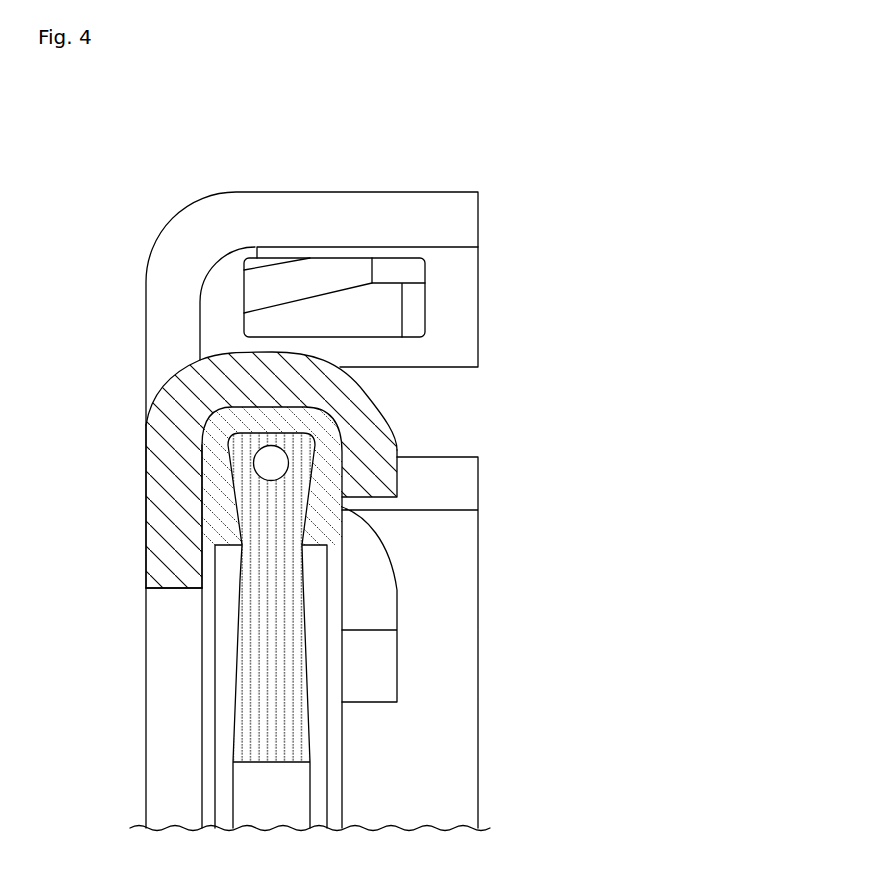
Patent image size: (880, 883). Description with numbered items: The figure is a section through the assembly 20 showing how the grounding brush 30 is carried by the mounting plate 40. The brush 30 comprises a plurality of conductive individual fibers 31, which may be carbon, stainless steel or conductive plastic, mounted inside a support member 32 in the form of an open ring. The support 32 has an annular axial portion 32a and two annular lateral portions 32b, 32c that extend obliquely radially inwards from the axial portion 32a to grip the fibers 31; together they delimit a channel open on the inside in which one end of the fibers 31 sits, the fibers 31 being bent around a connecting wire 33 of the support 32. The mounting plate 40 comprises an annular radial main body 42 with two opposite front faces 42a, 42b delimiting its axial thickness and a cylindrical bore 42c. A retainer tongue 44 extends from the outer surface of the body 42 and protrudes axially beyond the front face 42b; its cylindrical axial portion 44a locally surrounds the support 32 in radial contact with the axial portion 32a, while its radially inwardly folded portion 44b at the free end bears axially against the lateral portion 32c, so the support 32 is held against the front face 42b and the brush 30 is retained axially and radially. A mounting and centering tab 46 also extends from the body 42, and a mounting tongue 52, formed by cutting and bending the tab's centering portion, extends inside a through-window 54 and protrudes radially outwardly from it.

The display device assembly 20 is at (488, 143).
The brush 30 is at (324, 680).
The conductive individual fibers 31 is at (258, 705).
The support member 32 is at (213, 417).
The annular axial portion 32a is at (270, 423).
The annular lateral portion 32b is at (215, 510).
The annular lateral portion 32c is at (373, 533).
The connecting wire 33 is at (272, 463).
The mounting plate 40 is at (483, 183).
The annular radial main body 42 is at (170, 485).
The front face 42a is at (146, 523).
The front face 42b is at (213, 560).
The cylindrical bore 42c is at (170, 588).
The retainer tongue 44 is at (312, 385).
The axial portion 44a is at (248, 383).
The radially inwardly folded portion 44b is at (375, 447).
The mounting and centering tab 46 is at (433, 191).
The mounting tongue 52 is at (315, 270).
The window 54 is at (382, 313).